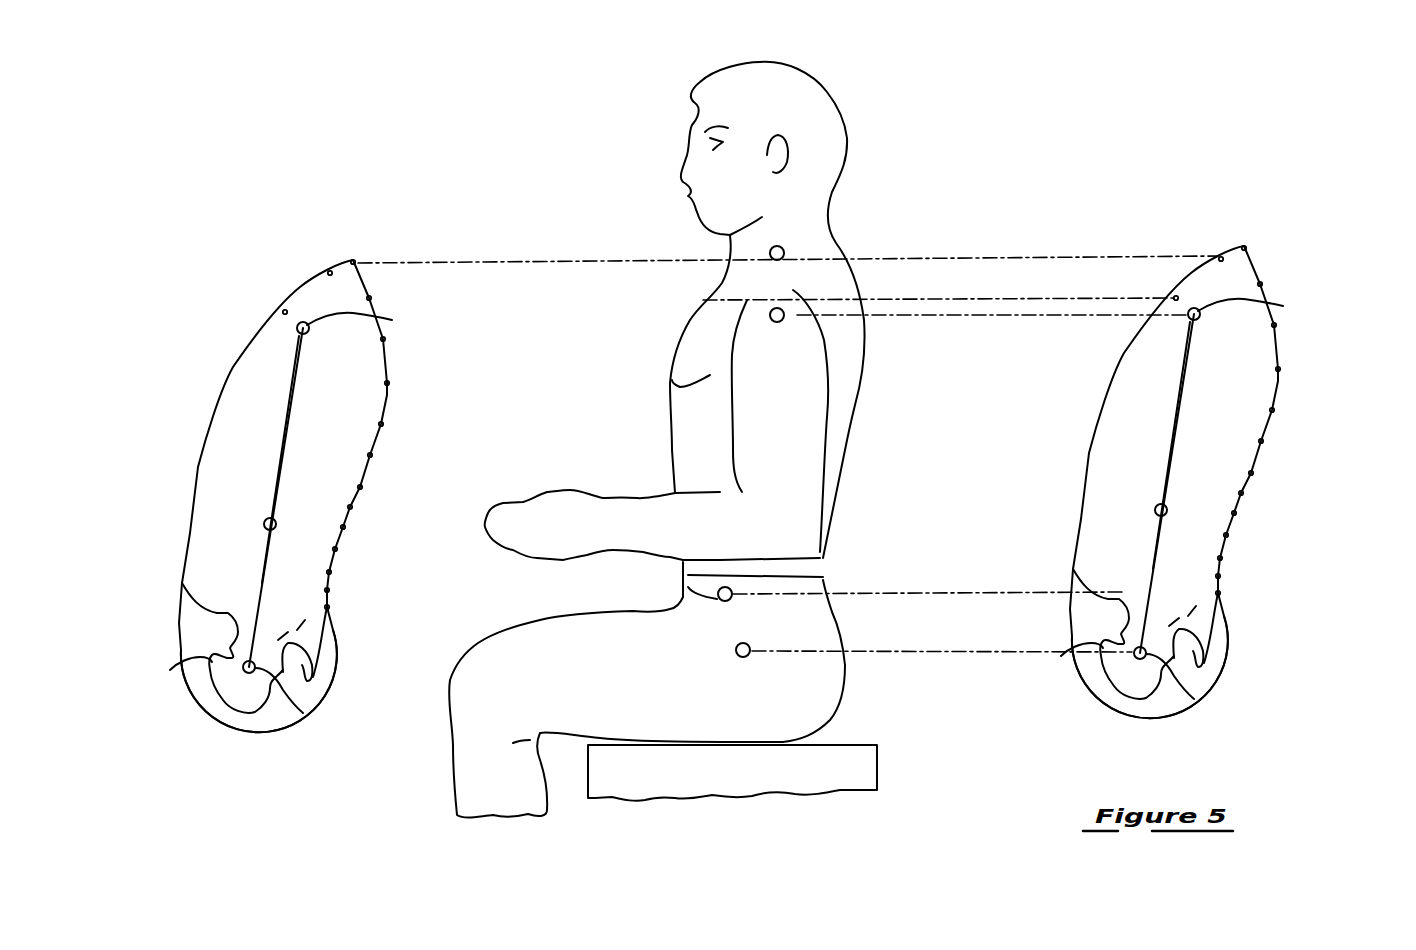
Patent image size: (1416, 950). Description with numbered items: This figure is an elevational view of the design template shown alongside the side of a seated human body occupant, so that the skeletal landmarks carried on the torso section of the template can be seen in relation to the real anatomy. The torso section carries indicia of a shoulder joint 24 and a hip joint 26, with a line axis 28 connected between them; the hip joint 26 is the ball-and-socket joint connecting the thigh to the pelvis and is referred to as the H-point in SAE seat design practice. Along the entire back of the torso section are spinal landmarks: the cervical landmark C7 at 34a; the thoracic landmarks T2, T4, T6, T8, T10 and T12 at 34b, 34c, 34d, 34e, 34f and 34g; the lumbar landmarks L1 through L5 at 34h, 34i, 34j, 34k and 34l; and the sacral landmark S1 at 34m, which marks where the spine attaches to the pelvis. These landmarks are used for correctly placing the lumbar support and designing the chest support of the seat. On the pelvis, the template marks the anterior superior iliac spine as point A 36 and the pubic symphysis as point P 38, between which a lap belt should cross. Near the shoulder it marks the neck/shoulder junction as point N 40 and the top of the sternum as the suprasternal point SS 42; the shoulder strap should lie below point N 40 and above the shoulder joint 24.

The shoulder joint 24 is at (392, 320).
The hip joint 26 is at (302, 705).
The line axis 28 is at (285, 432).
The spinal landmark C7 34a is at (354, 260).
The spinal landmark T2 34b is at (371, 298).
The spinal landmark T4 34c is at (385, 339).
The spinal landmark T6 34d is at (389, 383).
The spinal landmark T8 34e is at (383, 424).
The spinal landmark T10 34f is at (372, 455).
The spinal landmark T12 34g is at (362, 487).
The spinal landmark L1 34h is at (352, 507).
The spinal landmark L2 34i is at (345, 527).
The spinal landmark L3 34j is at (337, 549).
The spinal landmark L4 34k is at (331, 572).
The spinal landmark L5 34l is at (329, 590).
The spinal landmark S1 34m is at (329, 607).
The point A (anterior superior iliac spine) 36 is at (182, 583).
The point P (pubic symphysis) 38 is at (176, 670).
The point N (neck/shoulder junction) 40 is at (331, 271).
The point SS (suprasternal) 42 is at (285, 310).